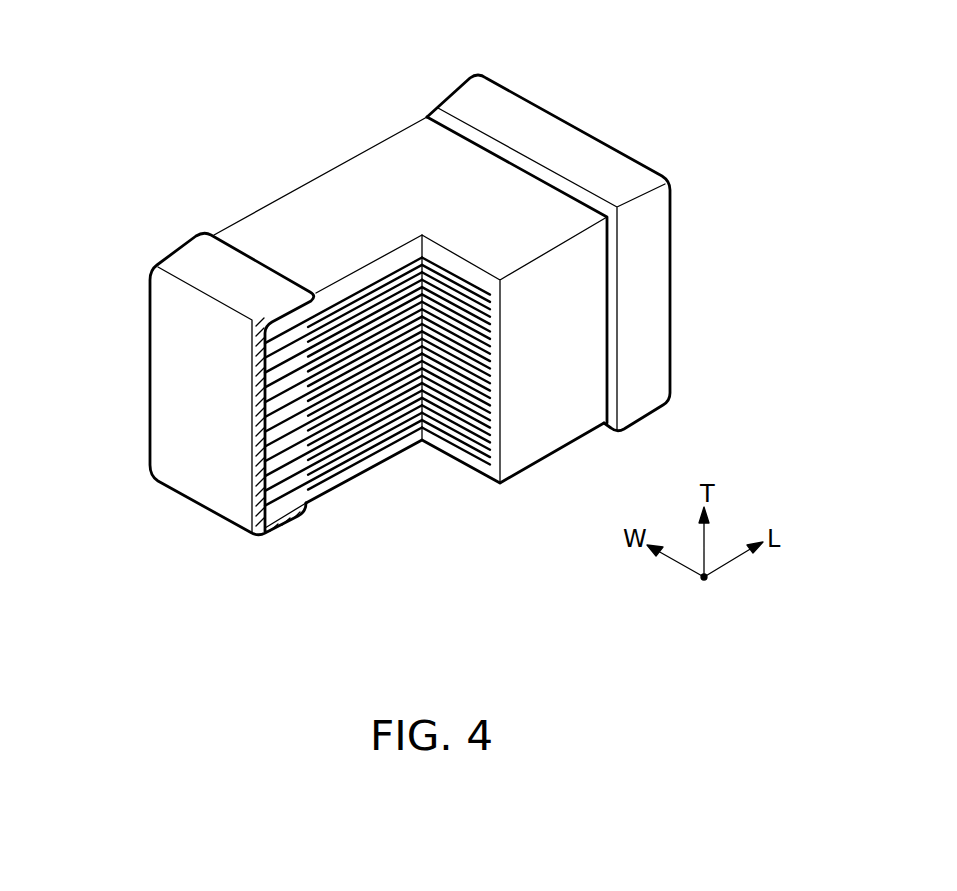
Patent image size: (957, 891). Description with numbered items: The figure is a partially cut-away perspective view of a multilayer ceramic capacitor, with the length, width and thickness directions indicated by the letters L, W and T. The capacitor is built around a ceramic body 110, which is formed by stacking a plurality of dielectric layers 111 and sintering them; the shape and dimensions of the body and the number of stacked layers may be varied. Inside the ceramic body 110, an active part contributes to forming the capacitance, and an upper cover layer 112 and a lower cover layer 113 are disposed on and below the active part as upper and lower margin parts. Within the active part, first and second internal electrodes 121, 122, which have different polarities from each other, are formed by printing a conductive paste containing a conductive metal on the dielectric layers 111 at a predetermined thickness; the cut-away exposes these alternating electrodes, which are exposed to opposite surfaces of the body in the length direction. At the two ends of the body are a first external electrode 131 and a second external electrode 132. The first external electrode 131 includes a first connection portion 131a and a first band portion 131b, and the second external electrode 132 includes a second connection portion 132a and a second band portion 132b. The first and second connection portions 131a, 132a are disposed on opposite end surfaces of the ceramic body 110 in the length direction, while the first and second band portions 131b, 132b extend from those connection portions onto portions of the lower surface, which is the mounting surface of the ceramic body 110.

The ceramic body 110 is at (387, 158).
The dielectric layers 111 is at (270, 363).
The upper cover layer 112 is at (378, 272).
The lower cover layer 113 is at (362, 460).
The first internal electrode 121 is at (282, 332).
The second internal electrode 122 is at (358, 303).
The first external electrode 131 is at (336, 599).
The first connection portion 131a is at (220, 470).
The first band portion 131b is at (288, 520).
The second external electrode 132 is at (725, 88).
The second connection portion 132a is at (633, 178).
The second band portion 132b is at (660, 253).